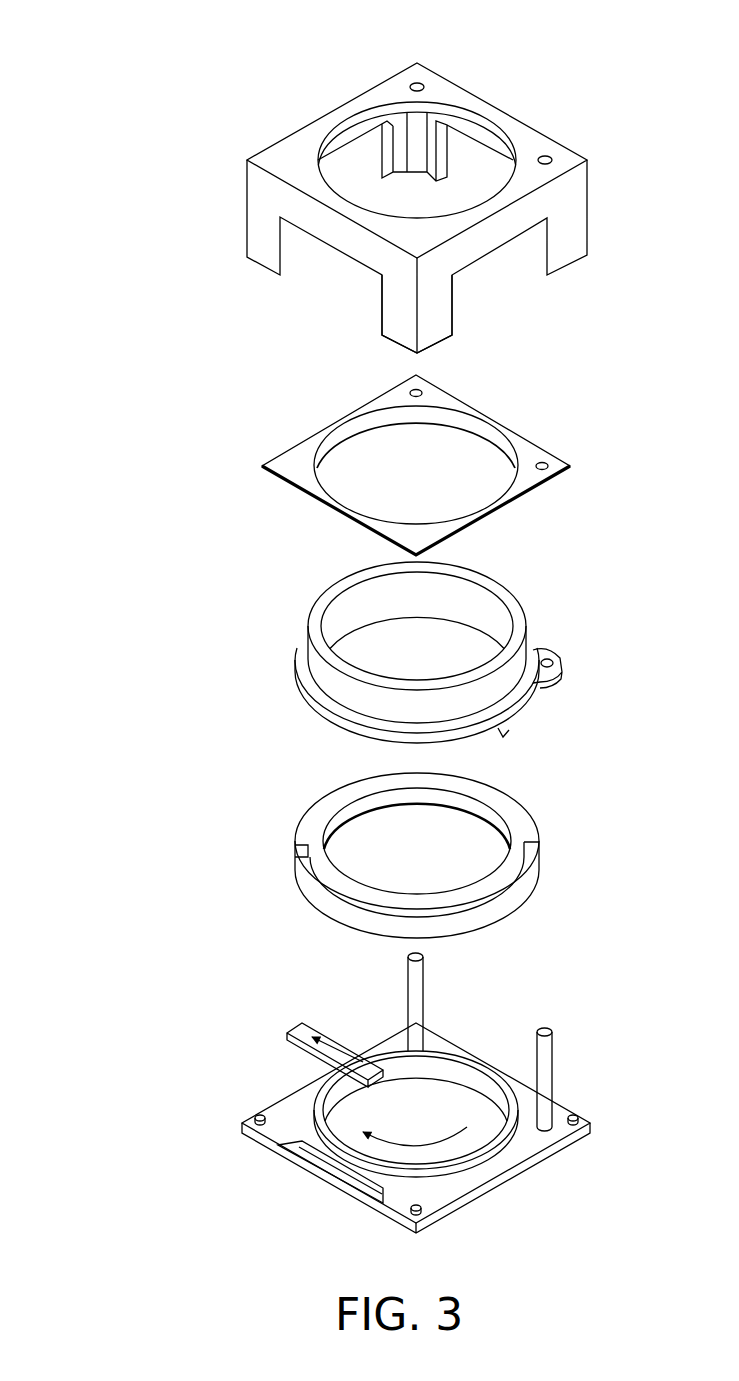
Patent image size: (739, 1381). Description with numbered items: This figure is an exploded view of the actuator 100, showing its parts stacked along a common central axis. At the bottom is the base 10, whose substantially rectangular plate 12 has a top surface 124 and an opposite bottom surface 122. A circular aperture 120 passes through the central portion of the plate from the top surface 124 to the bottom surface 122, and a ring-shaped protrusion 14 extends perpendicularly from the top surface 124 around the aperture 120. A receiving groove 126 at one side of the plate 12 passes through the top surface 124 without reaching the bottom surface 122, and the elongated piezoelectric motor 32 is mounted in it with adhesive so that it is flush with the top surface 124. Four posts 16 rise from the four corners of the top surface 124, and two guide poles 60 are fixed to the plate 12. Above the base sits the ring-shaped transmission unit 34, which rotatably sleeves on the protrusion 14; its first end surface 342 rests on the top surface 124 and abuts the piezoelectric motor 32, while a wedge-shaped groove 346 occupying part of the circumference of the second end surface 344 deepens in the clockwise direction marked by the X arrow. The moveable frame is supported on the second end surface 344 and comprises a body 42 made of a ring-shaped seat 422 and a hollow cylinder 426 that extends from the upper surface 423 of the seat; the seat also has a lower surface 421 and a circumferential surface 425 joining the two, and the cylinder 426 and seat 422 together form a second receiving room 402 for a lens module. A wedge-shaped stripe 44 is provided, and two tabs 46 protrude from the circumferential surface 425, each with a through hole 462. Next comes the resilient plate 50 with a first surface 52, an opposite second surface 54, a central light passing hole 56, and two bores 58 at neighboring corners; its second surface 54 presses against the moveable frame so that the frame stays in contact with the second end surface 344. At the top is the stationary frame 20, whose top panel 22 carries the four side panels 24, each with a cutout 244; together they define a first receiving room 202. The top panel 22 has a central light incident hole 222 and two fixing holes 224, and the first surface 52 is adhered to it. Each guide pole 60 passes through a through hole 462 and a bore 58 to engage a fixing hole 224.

The actuator 100 is at (197, 67).
The stationary frame 20 is at (176, 122).
The top panel 22 is at (277, 160).
The side panels 24 is at (258, 210).
The light incident hole 222 is at (458, 110).
The first receiving room 202 is at (478, 163).
The fixing holes 224 is at (557, 160).
The cutout 244 is at (318, 273).
The resilient plate 50 is at (193, 410).
The first surface 52 is at (293, 460).
The second surface 54 is at (295, 492).
The light passing hole 56 is at (455, 410).
The bores 58 is at (543, 463).
The body 42 is at (124, 575).
The hollow cylinder 426 is at (313, 605).
The ring-shaped seat 422 is at (201, 633).
The upper surface 423 is at (298, 655).
The circumferential surface 425 is at (297, 690).
The lower surface 421 is at (305, 707).
The second receiving room 402 is at (448, 652).
The tabs 46 is at (552, 678).
The through hole 462 is at (547, 662).
The wedge-shaped stripe 44 is at (503, 730).
The transmission unit 34 is at (196, 795).
The second end surface 344 is at (315, 822).
The first end surface 342 is at (303, 893).
The wedge-shaped groove 346 is at (525, 865).
The base 10 is at (233, 1073).
The plate 12 is at (158, 1097).
The top surface 124 is at (283, 1112).
The bottom surface 122 is at (273, 1150).
The receiving groove 126 is at (330, 1165).
The ring-shaped protrusion 14 is at (448, 1170).
The aperture 120 is at (483, 1137).
The posts 16 is at (572, 1118).
The guide poles 60 is at (545, 1062).
The piezoelectric motor 32 is at (297, 1027).